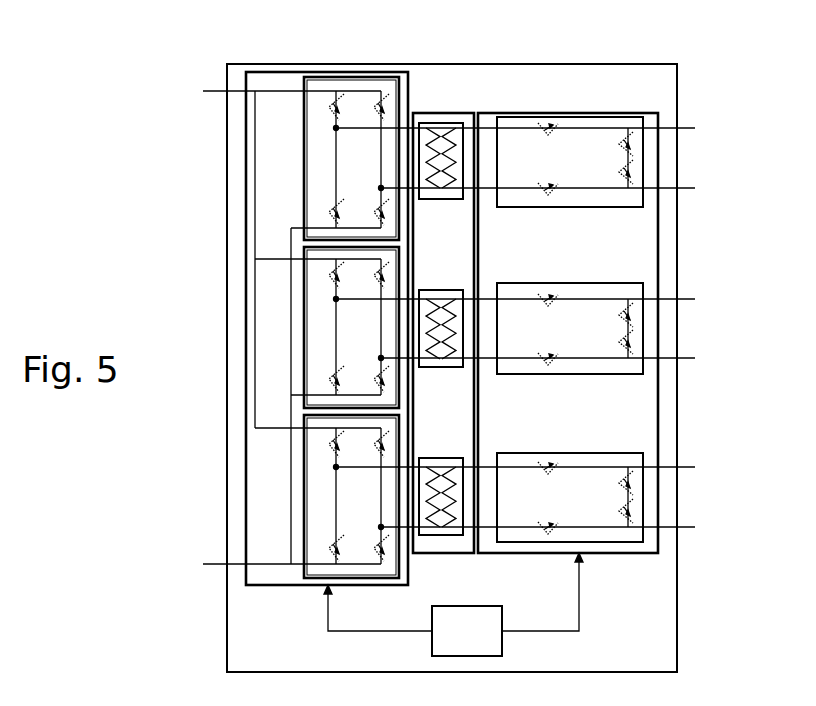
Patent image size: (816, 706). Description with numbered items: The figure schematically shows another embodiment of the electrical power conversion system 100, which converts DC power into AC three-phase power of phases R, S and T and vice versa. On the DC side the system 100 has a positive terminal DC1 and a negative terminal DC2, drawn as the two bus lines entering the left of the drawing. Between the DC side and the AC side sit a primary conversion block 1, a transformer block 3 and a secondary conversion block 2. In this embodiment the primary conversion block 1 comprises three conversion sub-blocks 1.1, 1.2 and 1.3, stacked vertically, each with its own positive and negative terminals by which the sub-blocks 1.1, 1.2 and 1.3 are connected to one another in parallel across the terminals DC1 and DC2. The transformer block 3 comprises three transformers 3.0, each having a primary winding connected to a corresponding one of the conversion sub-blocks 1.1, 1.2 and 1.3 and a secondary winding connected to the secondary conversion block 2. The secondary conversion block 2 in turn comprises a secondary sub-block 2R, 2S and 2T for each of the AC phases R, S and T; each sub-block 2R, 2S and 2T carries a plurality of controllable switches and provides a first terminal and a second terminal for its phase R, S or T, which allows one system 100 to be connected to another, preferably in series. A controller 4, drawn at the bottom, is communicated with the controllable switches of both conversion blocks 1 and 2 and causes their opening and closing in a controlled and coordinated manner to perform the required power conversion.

The electrical power conversion system 100 is at (224, 156).
The primary conversion block 1 is at (336, 303).
The conversion sub-block 1.1 is at (304, 160).
The conversion sub-block 1.2 is at (304, 317).
The conversion sub-block 1.3 is at (409, 569).
The transformer block 3 is at (457, 290).
The transformer 3.0 is at (443, 123).
The secondary conversion block 2 is at (596, 321).
The secondary sub-block 2R is at (632, 113).
The secondary sub-block 2S is at (643, 283).
The secondary sub-block 2T is at (638, 542).
The controller 4 is at (461, 641).
The positive terminal DC1 is at (203, 75).
The negative terminal DC2 is at (203, 577).
The AC phase R is at (704, 158).
The AC phase S is at (704, 328).
The AC phase T is at (704, 492).